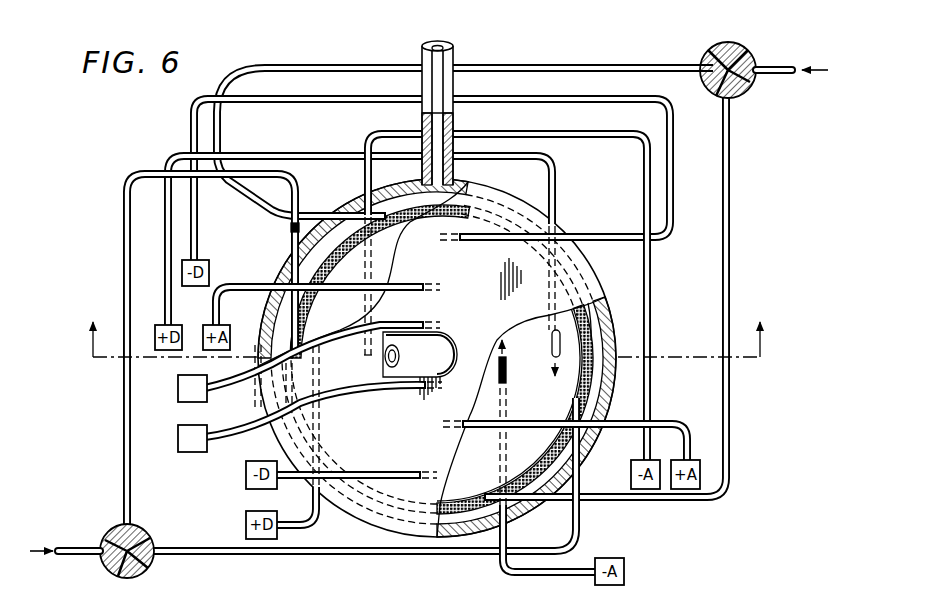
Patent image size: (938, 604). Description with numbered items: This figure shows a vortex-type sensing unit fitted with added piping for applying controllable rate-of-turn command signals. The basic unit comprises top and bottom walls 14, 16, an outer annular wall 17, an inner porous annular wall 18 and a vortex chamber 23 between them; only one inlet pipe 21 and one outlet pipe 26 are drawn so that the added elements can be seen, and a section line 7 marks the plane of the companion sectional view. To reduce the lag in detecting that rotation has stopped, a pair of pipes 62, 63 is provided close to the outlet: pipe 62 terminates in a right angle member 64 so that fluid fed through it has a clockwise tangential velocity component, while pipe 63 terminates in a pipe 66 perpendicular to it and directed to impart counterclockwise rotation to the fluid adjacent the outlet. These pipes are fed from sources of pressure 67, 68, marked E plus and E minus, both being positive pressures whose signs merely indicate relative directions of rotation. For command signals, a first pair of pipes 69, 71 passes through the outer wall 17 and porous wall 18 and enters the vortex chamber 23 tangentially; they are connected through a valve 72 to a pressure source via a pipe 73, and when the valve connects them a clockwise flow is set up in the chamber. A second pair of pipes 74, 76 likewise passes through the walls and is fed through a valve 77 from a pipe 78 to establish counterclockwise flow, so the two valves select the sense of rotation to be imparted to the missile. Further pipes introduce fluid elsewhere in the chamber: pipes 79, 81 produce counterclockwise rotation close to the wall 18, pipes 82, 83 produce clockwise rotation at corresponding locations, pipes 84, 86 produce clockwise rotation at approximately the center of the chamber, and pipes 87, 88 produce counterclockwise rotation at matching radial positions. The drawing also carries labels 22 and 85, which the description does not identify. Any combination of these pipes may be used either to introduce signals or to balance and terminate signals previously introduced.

The section line 7- 7 is at (425, 322).
The top wall 14 is at (578, 285).
The bottom wall 16 is at (541, 404).
The outer annular wall 17 is at (603, 322).
The inner porous annular wall 18 is at (592, 376).
The inlet pipe 21 is at (456, 50).
The inner wall 22 is at (600, 406).
The vortex chamber 23 is at (593, 337).
The outlet pipe 26 is at (384, 362).
The pipe 62 is at (331, 340).
The pipe 63 is at (414, 390).
The right angle member 64 is at (433, 326).
The pipe 66 is at (443, 386).
The source of pressure 67 is at (178, 392).
The source of pressure 68 is at (178, 441).
The pipe 69 is at (537, 66).
The pipe 71 is at (729, 402).
The valve 72 is at (739, 47).
The pipe 73 is at (786, 66).
The pipe 74 is at (125, 250).
The pipe 76 is at (582, 470).
The valve 77 is at (143, 572).
The pipe 78 is at (90, 548).
The pipe 79 is at (198, 207).
The pipe 81 is at (386, 473).
The pipe 82 is at (560, 200).
The pipe 83 is at (319, 430).
The pipe 84 is at (498, 432).
The positive A right lead 85 is at (563, 440).
The pipe 86 is at (406, 286).
The pipe 87 is at (366, 348).
The pipe 88 is at (507, 372).